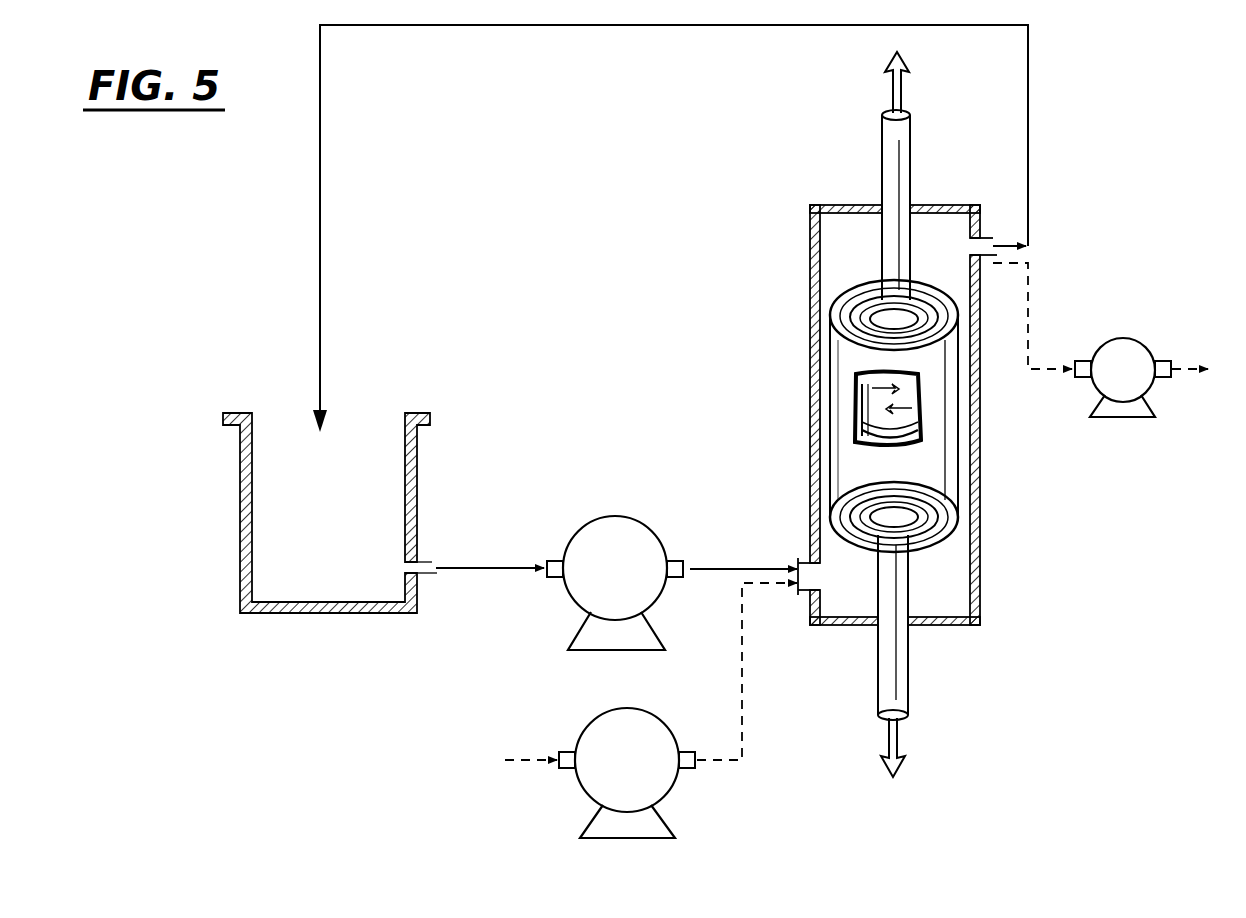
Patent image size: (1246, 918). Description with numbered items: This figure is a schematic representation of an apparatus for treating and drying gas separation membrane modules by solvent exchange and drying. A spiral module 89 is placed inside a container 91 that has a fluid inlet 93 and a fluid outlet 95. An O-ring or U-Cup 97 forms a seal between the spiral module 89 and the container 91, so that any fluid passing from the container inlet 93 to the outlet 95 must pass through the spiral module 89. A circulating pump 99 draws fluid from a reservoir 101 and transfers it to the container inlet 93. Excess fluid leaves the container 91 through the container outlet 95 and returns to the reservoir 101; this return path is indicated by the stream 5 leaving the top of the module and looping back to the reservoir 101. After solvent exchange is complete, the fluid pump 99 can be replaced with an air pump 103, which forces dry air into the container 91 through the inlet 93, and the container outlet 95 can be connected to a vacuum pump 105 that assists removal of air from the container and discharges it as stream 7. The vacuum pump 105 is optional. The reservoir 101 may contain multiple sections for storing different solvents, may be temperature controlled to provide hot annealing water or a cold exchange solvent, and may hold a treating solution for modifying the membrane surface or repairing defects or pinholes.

The outlet stream 5 is at (909, 82).
The product stream 7 is at (1201, 370).
The spiral module 89 is at (833, 417).
The container 91 is at (808, 237).
The fluid inlet 93 is at (792, 588).
The fluid outlet 95 is at (998, 226).
The U-Cup 97 is at (812, 514).
The circulating pump 99 is at (598, 530).
The reservoir 101 is at (348, 504).
The air pump 103 is at (598, 730).
The vacuum pump 105 is at (1117, 390).